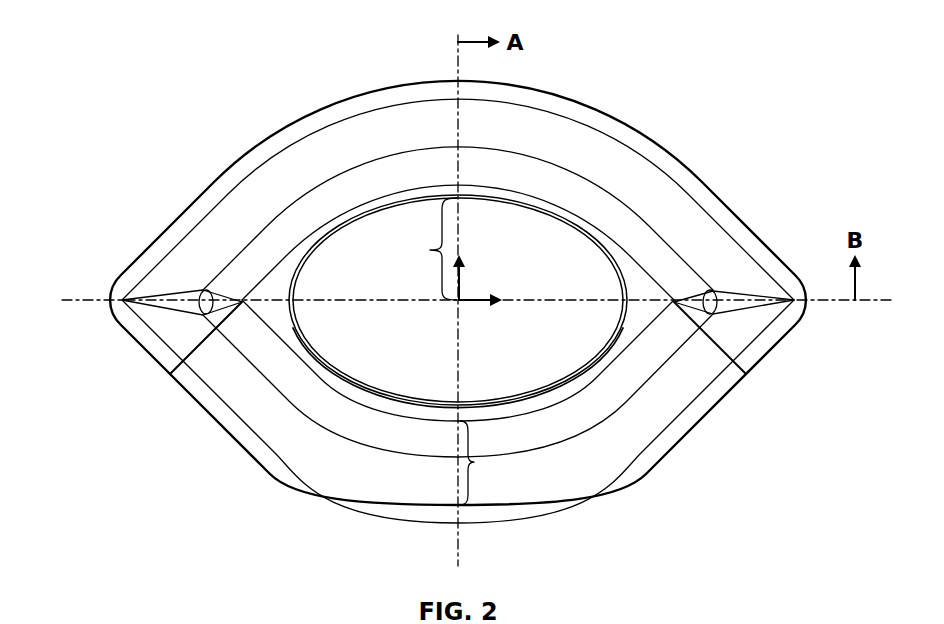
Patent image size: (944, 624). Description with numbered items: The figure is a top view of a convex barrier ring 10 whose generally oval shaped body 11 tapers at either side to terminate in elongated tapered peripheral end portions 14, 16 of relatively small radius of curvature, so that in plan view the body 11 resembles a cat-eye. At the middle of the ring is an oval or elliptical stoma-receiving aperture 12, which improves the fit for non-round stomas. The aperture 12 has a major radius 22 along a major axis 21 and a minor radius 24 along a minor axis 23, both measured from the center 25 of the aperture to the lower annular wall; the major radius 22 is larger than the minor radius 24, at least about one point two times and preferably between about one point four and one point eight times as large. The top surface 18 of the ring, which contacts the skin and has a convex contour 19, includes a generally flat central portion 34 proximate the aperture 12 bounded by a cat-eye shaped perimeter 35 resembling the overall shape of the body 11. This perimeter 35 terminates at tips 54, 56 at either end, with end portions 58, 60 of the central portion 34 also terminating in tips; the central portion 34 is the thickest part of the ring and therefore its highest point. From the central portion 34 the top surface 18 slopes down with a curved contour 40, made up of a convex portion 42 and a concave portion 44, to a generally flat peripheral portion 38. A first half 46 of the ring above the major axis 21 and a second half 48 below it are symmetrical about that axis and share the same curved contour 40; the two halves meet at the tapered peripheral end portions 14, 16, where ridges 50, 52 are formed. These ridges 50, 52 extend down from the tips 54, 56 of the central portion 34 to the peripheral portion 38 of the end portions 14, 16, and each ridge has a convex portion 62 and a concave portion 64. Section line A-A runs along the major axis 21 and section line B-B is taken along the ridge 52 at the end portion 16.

The convex barrier ring 10 is at (126, 48).
The oval shaped body 11 is at (722, 202).
The stoma-receiving aperture 12 is at (518, 234).
The tapered peripheral end portion 14 is at (152, 285).
The tapered peripheral end portion 16 is at (762, 276).
The top surface 18 is at (657, 190).
The convex contour 19 is at (597, 200).
The major axis 21 is at (73, 305).
The major radius 22 is at (459, 305).
The minor axis 23 is at (456, 552).
The minor radius 24 is at (430, 250).
The center 25 is at (457, 303).
The central portion 34 is at (278, 288).
The cat-eye shaped perimeter 35 is at (260, 288).
The peripheral portion 38 is at (670, 442).
The curved contour 40 is at (474, 462).
The convex portion 42 is at (545, 435).
The concave portion 44 is at (618, 448).
The first half 46 is at (318, 108).
The second half 48 is at (273, 435).
The ridge 50 is at (155, 362).
The ridge 52 is at (737, 310).
The tip 54 is at (171, 377).
The tip 56 is at (705, 308).
The end portion 58 is at (219, 425).
The end portion 60 is at (683, 312).
The convex portion 62 is at (727, 313).
The concave portion 64 is at (798, 326).